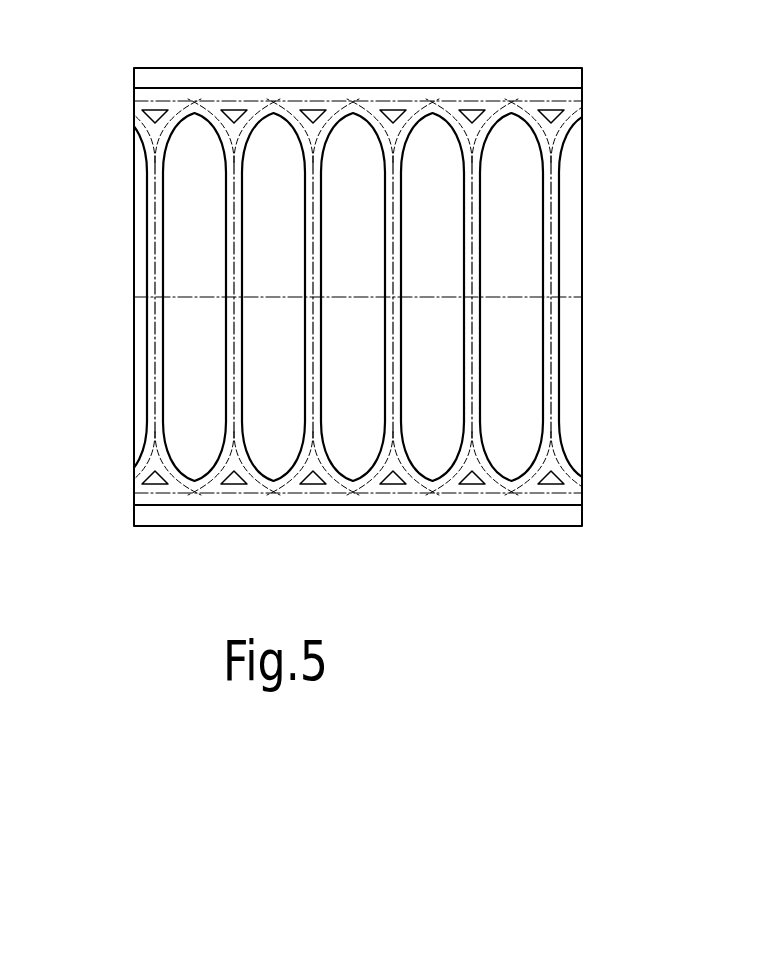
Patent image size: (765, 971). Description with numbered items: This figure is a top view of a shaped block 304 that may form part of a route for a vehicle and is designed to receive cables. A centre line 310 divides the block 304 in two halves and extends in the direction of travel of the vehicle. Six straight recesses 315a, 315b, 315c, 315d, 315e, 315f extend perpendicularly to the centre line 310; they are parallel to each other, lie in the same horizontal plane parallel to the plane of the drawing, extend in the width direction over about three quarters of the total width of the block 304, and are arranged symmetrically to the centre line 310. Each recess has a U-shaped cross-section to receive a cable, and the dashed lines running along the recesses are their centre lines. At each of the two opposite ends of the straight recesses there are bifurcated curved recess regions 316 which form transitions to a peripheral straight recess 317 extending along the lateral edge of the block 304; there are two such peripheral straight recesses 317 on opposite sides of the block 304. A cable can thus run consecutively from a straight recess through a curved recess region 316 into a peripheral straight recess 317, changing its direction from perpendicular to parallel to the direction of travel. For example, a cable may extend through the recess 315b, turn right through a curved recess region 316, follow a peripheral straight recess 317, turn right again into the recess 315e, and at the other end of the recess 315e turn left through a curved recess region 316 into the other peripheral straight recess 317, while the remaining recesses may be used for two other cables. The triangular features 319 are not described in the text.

The shaped block 304 is at (160, 527).
The centre line 310 is at (563, 296).
The recess 315a is at (148, 362).
The recess 315b is at (243, 330).
The recess 315c is at (323, 395).
The recess 315d is at (401, 240).
The recess 315e is at (480, 372).
The recess 315f is at (559, 230).
The bifurcated curved recess region 316 is at (253, 117).
The peripheral straight recess 317 is at (507, 103).
The triangular rib 319 is at (246, 103).